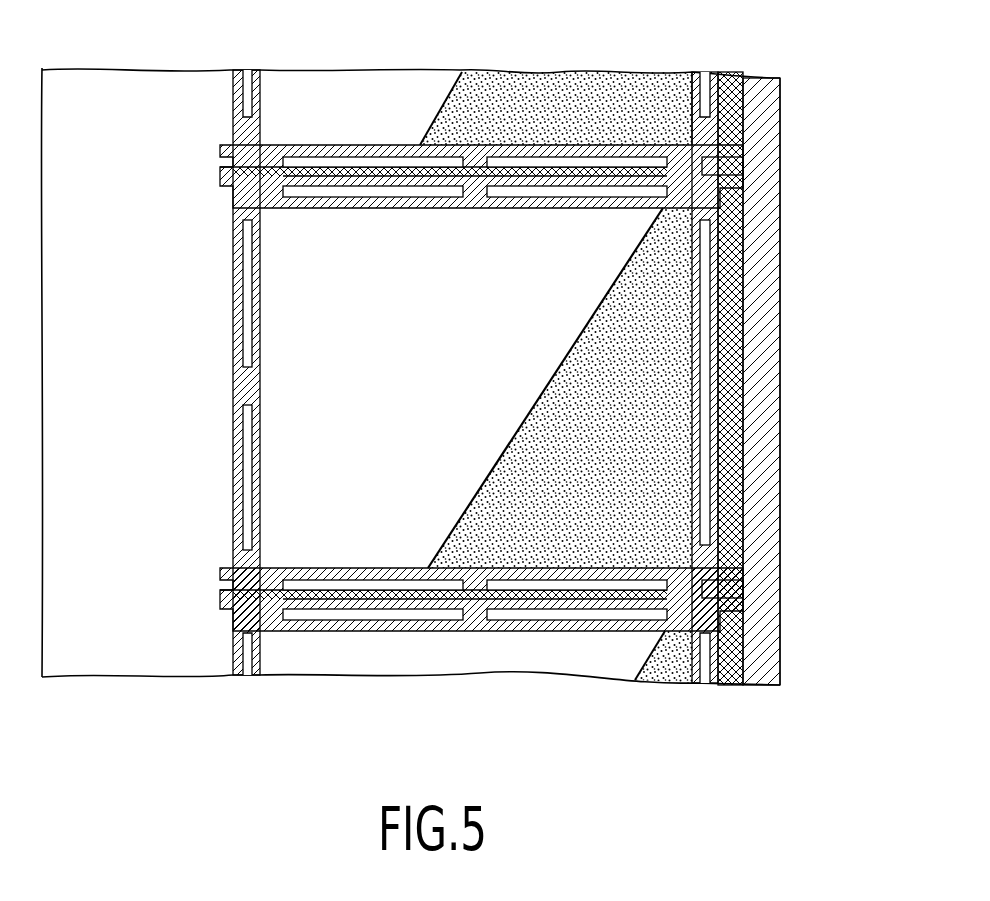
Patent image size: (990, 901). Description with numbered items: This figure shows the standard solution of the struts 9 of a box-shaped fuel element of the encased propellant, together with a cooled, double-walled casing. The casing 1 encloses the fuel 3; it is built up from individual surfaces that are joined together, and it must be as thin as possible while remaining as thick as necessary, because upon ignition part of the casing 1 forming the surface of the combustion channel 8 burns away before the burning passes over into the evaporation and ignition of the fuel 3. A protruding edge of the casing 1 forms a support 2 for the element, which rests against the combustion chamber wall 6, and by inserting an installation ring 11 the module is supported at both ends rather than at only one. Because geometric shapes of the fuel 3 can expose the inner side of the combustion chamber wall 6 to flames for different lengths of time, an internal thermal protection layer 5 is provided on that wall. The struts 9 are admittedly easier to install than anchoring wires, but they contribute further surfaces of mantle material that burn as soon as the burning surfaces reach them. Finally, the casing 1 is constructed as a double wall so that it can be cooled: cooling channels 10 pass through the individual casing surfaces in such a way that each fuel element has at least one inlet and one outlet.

The casing 1 is at (260, 98).
The support 2 is at (222, 180).
The fuel 3 is at (360, 126).
The internal thermal protection layer 5 is at (730, 683).
The combustion chamber wall 6 is at (773, 668).
The combustion channel 8 is at (573, 126).
The struts 9 is at (598, 433).
The cooling channels 10 is at (240, 337).
The installation ring 11 is at (820, 192).